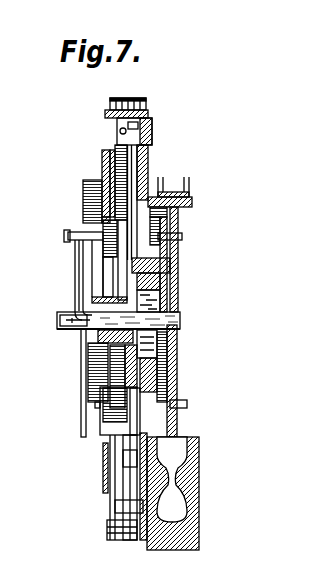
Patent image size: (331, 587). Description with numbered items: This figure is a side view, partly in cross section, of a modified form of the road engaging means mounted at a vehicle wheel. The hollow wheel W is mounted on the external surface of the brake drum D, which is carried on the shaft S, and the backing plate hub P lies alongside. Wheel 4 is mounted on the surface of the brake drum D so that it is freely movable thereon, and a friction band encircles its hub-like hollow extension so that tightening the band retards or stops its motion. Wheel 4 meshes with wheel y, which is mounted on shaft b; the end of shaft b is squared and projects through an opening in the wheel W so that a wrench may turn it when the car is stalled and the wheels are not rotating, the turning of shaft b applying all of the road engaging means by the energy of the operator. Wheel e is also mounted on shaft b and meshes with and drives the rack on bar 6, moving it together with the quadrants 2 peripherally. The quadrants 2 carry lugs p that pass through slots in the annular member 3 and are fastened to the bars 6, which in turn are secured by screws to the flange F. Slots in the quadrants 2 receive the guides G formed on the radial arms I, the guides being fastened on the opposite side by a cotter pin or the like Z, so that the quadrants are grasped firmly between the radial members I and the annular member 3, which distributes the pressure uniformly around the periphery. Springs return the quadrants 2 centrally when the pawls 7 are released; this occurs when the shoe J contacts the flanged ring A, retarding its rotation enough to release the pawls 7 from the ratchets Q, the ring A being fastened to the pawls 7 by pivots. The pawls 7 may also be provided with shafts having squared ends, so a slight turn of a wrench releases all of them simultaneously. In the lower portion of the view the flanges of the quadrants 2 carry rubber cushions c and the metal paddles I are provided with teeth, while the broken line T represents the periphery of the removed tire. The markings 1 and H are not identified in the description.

The cap nut 1 is at (141, 110).
The flange F is at (112, 119).
The guides G is at (152, 130).
The cotter pin Z is at (128, 128).
The quadrants 2 is at (120, 137).
The lugs p is at (149, 174).
The bar 6 is at (112, 151).
The flanged ring A is at (81, 201).
The ratchets Q is at (105, 175).
The annular member 3 is at (108, 213).
The wheel e is at (103, 234).
The supply pipe H is at (75, 313).
The shaft S is at (58, 320).
The shoe J is at (77, 327).
The wheel y is at (162, 222).
The shaft b is at (169, 247).
The wheel 4 is at (165, 269).
The hollow wheel W is at (173, 348).
The brake drum D is at (160, 374).
The backing plate hub P is at (150, 383).
The pawls 7 is at (93, 491).
The rubber cushions c is at (144, 541).
The radial arms I is at (123, 538).
The broken line T is at (178, 551).